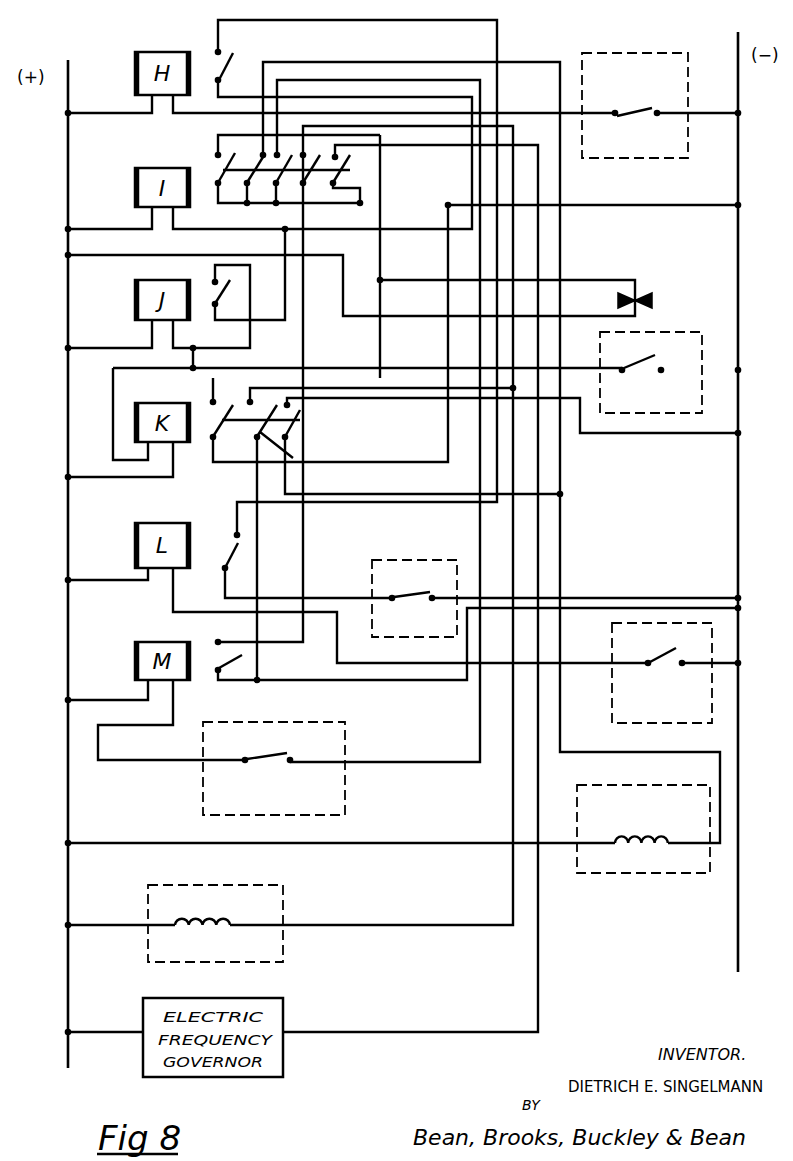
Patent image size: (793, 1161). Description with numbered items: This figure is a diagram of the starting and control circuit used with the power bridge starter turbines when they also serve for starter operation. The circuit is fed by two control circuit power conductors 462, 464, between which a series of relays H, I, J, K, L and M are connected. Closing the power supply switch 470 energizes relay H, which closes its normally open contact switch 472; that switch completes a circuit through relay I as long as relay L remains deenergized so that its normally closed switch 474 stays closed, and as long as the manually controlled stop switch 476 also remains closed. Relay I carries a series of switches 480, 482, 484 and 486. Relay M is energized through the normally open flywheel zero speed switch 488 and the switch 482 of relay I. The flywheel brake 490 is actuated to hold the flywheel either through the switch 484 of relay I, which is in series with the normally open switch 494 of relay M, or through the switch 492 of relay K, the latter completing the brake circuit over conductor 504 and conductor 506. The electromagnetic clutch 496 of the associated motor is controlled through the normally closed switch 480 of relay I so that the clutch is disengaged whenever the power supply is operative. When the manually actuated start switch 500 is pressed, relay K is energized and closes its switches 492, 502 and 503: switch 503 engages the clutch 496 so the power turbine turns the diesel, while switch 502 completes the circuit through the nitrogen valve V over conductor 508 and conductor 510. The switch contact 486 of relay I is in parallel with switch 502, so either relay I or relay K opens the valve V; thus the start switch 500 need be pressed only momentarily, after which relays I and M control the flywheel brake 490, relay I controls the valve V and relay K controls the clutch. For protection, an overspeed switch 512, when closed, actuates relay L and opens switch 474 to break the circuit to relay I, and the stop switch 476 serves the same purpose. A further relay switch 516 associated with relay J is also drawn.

The control circuit power conductor 462 is at (68, 818).
The control circuit power conductor 464 is at (735, 915).
The power supply switch 470 is at (653, 31).
The normally open contact switch 472 is at (218, 75).
The normally closed switch 474 is at (232, 545).
The stop switch 476 is at (397, 558).
The normally closed switch 480 is at (250, 172).
The switch 482 is at (285, 186).
The switch 484 is at (310, 183).
The switch contact 486 is at (350, 165).
The flywheel zero speed switch 488 is at (215, 172).
The flywheel brake 490 is at (283, 886).
The switch 492 is at (310, 471).
The normally opened switch 494 is at (225, 662).
The electromagnetic clutch 496 is at (648, 873).
The start switch 500 is at (648, 331).
The switch 502 is at (223, 423).
The switch 503 is at (296, 426).
The conductor 504 is at (435, 388).
The conductor 506 is at (257, 482).
The conductor 508 is at (380, 345).
The conductor 510 is at (423, 461).
The overspeed switch 512 is at (630, 722).
The relay J switch contact 516 is at (215, 292).
The nitrogen valve V is at (640, 290).